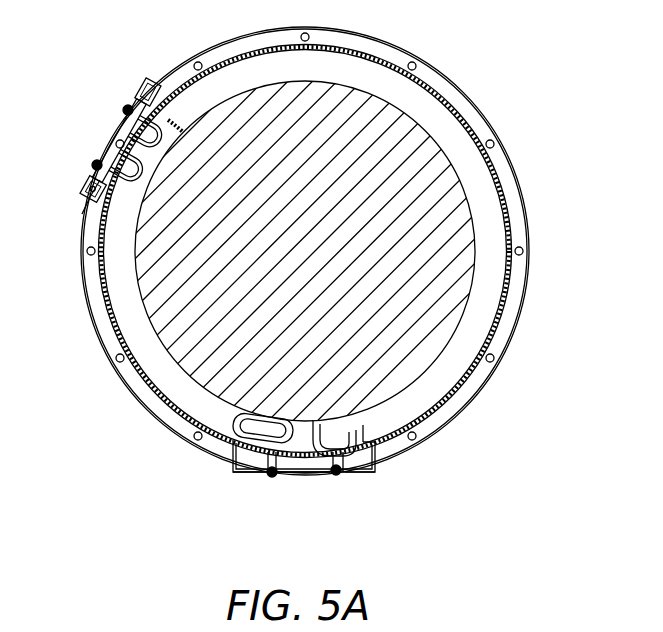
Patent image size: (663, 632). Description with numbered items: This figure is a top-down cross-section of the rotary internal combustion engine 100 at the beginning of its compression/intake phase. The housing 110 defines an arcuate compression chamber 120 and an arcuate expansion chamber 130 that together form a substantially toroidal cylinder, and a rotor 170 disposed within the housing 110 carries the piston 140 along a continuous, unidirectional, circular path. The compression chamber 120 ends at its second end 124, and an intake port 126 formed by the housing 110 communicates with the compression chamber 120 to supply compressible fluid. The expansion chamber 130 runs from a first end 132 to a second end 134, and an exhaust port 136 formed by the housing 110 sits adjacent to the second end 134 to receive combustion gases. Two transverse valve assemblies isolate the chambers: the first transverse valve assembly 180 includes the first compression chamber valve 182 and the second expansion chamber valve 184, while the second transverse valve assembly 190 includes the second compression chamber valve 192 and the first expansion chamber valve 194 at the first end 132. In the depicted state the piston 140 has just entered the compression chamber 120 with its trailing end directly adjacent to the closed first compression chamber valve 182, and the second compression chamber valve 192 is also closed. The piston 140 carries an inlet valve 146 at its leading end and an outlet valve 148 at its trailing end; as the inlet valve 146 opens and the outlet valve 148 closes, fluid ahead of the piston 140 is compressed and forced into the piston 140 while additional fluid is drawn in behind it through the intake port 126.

The rotary internal combustion engine 100 is at (560, 74).
The housing 110 is at (522, 180).
The compression chamber 120 is at (137, 330).
The second end of the compression chamber 124 is at (90, 222).
The intake port 126 is at (258, 485).
The expansion chamber 130 is at (482, 320).
The first end of the expansion chamber 132 is at (141, 124).
The second end of the expansion chamber 134 is at (352, 422).
The exhaust port 136 is at (365, 480).
The piston 140 is at (233, 470).
The inlet valve 146 is at (236, 432).
The outlet valve 148 is at (302, 444).
The rotor 170 is at (474, 288).
The first transverse valve assembly 180 is at (328, 486).
The first compression chamber valve 182 is at (334, 468).
The second expansion chamber valve 184 is at (390, 435).
The second transverse valve assembly 190 is at (94, 122).
The second compression chamber valve 192 is at (120, 157).
The first expansion chamber valve 194 is at (124, 140).